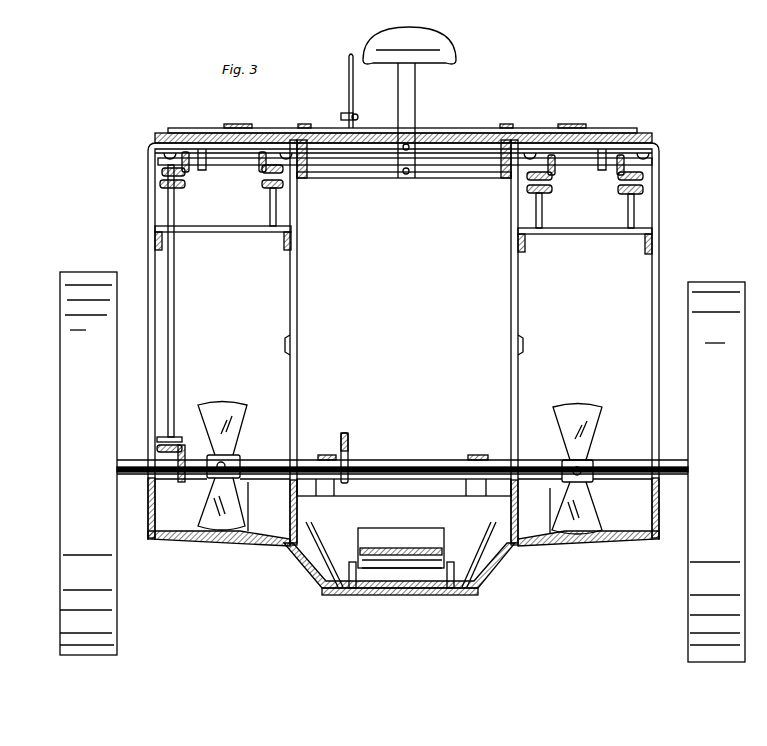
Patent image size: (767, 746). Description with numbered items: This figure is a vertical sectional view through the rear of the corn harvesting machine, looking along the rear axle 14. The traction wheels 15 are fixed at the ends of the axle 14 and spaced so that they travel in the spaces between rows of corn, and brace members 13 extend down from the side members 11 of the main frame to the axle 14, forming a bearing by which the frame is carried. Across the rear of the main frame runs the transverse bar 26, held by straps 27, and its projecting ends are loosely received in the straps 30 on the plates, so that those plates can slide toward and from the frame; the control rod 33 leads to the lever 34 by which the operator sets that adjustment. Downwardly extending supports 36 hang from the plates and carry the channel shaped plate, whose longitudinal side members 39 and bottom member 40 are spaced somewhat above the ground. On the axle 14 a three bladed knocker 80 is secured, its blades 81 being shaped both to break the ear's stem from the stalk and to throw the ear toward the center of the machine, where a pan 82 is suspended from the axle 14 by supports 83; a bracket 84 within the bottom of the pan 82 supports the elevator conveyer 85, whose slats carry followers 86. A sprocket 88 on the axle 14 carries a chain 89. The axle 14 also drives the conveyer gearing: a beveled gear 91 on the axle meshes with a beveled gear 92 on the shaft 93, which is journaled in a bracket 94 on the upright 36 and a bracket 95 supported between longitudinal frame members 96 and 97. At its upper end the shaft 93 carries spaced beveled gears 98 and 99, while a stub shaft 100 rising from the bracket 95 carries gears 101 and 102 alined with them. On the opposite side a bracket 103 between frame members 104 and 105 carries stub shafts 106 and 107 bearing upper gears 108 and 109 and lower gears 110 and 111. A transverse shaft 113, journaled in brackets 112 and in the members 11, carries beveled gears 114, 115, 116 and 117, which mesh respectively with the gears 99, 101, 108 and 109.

The side member 11 is at (307, 152).
The brace member 13 is at (297, 312).
The rear axle 14 is at (127, 461).
The traction wheel 15 is at (402, 467).
The transverse bar 26 is at (446, 133).
The strap 27 is at (305, 124).
The strap 30 is at (234, 124).
The control rod 33 is at (344, 113).
The lever 34 is at (353, 86).
The downwardly extending support 36 is at (148, 290).
The longitudinal side member 39 is at (158, 500).
The bottom member 40 is at (183, 540).
The knocker 80 is at (240, 460).
The blade 81 is at (400, 468).
The pan 82 is at (313, 570).
The support 83 is at (321, 455).
The bracket 84 is at (363, 575).
The elevator conveyer 85 is at (419, 550).
The follower 86 is at (387, 531).
The sprocket 88 is at (349, 456).
The chain 89 is at (348, 434).
The beveled gear 91 is at (186, 460).
The beveled gear 92 is at (176, 445).
The shaft 93 is at (174, 284).
The bracket 94 is at (165, 437).
The bracket 95 is at (203, 228).
The longitudinal frame member 96 is at (155, 239).
The longitudinal frame member 97 is at (291, 240).
The beveled gear 98 is at (186, 184).
The beveled gear 99 is at (162, 172).
The stub shaft 100 is at (270, 198).
The beveled gear 101 is at (284, 170).
The beveled gear 102 is at (284, 185).
The bracket 103 is at (598, 234).
The longitudinal frame member 104 is at (525, 240).
The longitudinal frame member 105 is at (648, 248).
The stub shaft 106 is at (542, 210).
The stub shaft 107 is at (628, 210).
The beveled gear 108 is at (553, 177).
The beveled gear 109 is at (643, 176).
The beveled gear 110 is at (553, 189).
The beveled gear 111 is at (643, 190).
The bracket 112 is at (206, 153).
The transverse shaft 113 is at (242, 165).
The beveled gear 114 is at (182, 160).
The beveled gear 115 is at (262, 152).
The beveled gear 116 is at (551, 155).
The beveled gear 117 is at (621, 155).